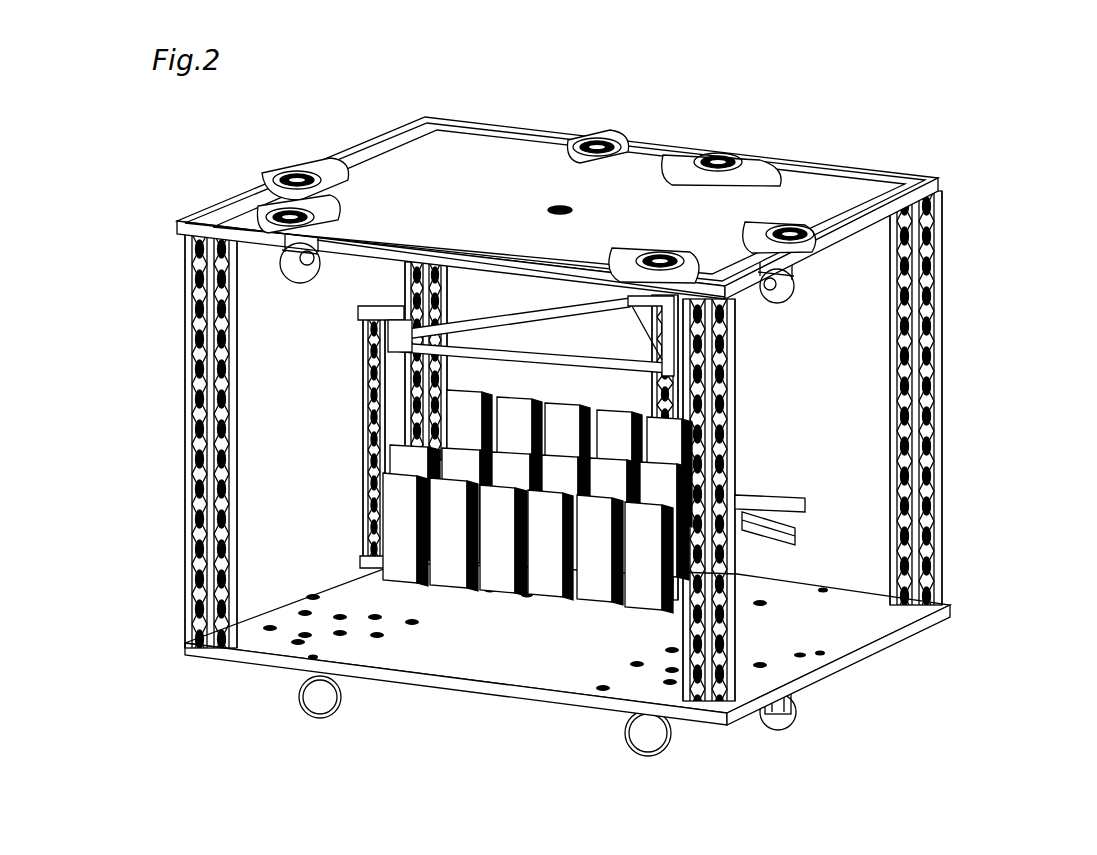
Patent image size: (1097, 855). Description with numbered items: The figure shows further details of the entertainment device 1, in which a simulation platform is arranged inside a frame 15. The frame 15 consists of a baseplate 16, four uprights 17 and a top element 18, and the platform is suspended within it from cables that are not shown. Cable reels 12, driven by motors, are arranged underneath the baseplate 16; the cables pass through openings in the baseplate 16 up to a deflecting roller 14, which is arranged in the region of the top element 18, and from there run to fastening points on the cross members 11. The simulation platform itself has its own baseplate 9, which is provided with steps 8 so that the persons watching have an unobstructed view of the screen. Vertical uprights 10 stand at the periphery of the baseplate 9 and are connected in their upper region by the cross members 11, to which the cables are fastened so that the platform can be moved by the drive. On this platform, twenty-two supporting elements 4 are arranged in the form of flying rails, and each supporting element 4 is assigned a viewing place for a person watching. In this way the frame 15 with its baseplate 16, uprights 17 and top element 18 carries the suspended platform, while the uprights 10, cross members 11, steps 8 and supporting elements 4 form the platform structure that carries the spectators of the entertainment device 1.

The entertainment device 1 is at (922, 97).
The supporting elements 4 is at (515, 475).
The steps 8 is at (752, 518).
The baseplate 9 is at (762, 508).
The vertical uprights 10 is at (370, 456).
The cross members 11 is at (543, 330).
The cable reels 12 is at (325, 698).
The deflecting roller 14 is at (780, 225).
The frame 15 is at (1032, 98).
The baseplate 16 is at (833, 610).
The uprights 17 is at (730, 368).
The top element 18 is at (820, 204).